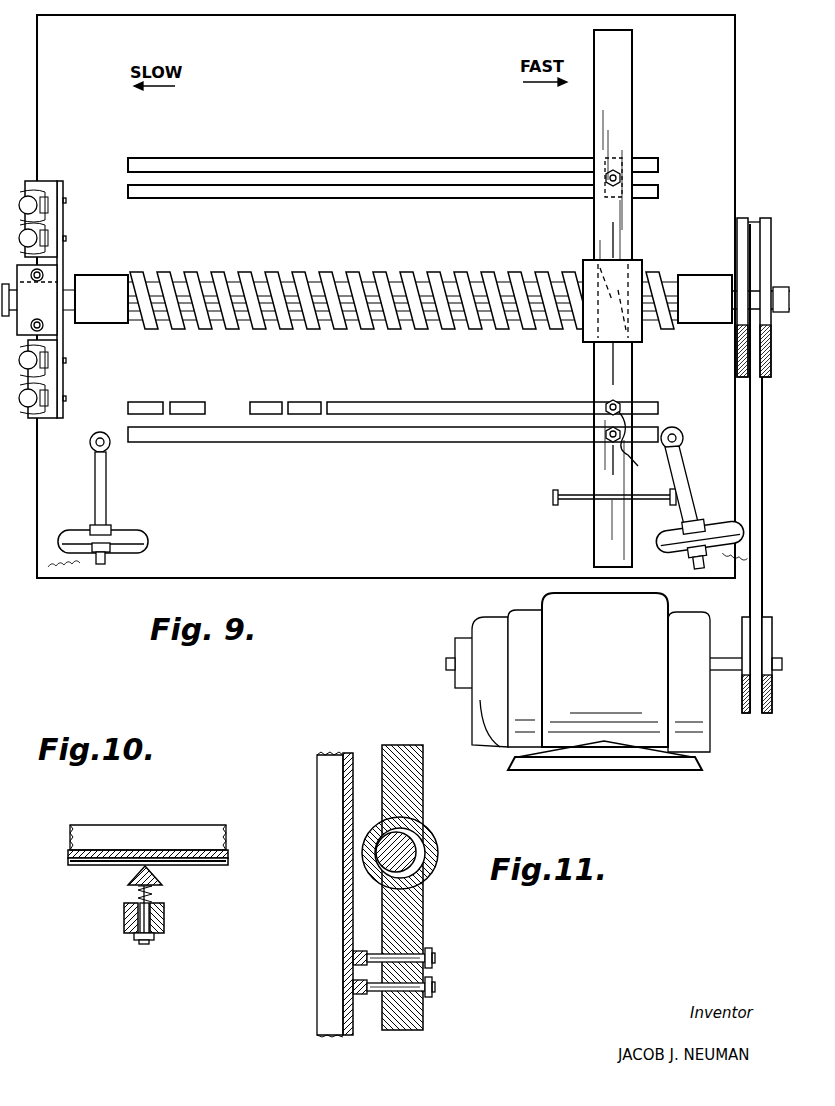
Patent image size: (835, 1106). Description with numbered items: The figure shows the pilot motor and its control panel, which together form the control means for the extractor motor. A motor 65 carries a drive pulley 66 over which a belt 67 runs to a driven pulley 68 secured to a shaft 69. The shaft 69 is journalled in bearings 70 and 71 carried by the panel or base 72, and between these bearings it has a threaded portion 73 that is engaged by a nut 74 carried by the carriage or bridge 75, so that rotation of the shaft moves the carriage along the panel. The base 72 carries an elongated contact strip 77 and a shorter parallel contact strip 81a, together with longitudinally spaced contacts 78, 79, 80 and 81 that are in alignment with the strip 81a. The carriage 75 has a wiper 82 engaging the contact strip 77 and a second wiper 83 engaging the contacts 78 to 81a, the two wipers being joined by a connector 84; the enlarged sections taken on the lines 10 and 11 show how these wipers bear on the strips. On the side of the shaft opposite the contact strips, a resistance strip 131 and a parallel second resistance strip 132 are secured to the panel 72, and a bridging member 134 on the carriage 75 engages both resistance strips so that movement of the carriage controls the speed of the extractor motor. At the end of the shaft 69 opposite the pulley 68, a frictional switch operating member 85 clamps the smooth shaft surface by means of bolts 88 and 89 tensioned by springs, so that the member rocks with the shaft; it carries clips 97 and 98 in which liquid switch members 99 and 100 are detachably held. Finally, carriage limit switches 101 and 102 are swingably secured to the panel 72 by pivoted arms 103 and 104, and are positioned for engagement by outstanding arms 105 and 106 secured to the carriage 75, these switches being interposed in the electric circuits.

In FIG. 9, the panel or base 72 is at (324, 22).
In FIG. 10, the panel or base 72 is at (68, 855).
In FIG. 11, the panel or base 72 is at (353, 1038).
In FIG. 9, the resistance strip 131 is at (312, 159).
In FIG. 9, the second resistance strip 132 is at (521, 197).
In FIG. 9, the bridging member 134 is at (617, 170).
In FIG. 9, the carriage or bridge 75 is at (634, 222).
In FIG. 10, the carriage or bridge 75 is at (123, 918).
In FIG. 11, the carriage or bridge 75 is at (423, 782).
In FIG. 9, the section line 11— 11 is at (605, 222).
In FIG. 9, the threaded portion 73 is at (297, 270).
In FIG. 11, the threaded portion 73 is at (412, 868).
In FIG. 11, the nut 74 is at (420, 838).
In FIG. 9, the bearing 71 is at (113, 273).
In FIG. 9, the bearing 70 is at (705, 325).
In FIG. 9, the shaft 69 is at (788, 314).
In FIG. 9, the driven pulley 68 is at (770, 222).
In FIG. 9, the belt 67 is at (750, 594).
In FIG. 9, the drive pulley 66 is at (745, 700).
In FIG. 9, the motor 65 is at (700, 728).
In FIG. 9, the frictional switch operating member 85 is at (28, 178).
In FIG. 9, the bolt 89 is at (43, 275).
In FIG. 9, the bolt 88 is at (44, 326).
In FIG. 9, the clip 98 is at (57, 346).
In FIG. 9, the liquid switch member 100 is at (40, 363).
In FIG. 9, the liquid switch member 99 is at (22, 404).
In FIG. 9, the clip 97 is at (50, 418).
In FIG. 9, the contact 78 is at (148, 402).
In FIG. 9, the contact 79 is at (180, 402).
In FIG. 9, the contact 80 is at (265, 402).
In FIG. 9, the contact 81 is at (318, 402).
In FIG. 9, the second contact strip 81a is at (358, 402).
In FIG. 9, the elongated contact strip 77 is at (332, 442).
In FIG. 10, the elongated contact strip 77 is at (228, 866).
In FIG. 9, the section line 10— 10 is at (563, 398).
In FIG. 9, the connector 84 is at (640, 447).
In FIG. 9, the pivoted arm 104 is at (683, 463).
In FIG. 9, the outstanding arm 106 is at (676, 492).
In FIG. 9, the outstanding arm 105 is at (570, 500).
In FIG. 9, the carriage limit switch 102 is at (668, 532).
In FIG. 9, the pivoted arm 103 is at (97, 486).
In FIG. 9, the carriage limit switch 101 is at (145, 546).
In FIG. 10, the second wiper 83 is at (158, 870).
In FIG. 11, the second wiper 83 is at (368, 950).
In FIG. 11, the wiper 82 is at (356, 1000).